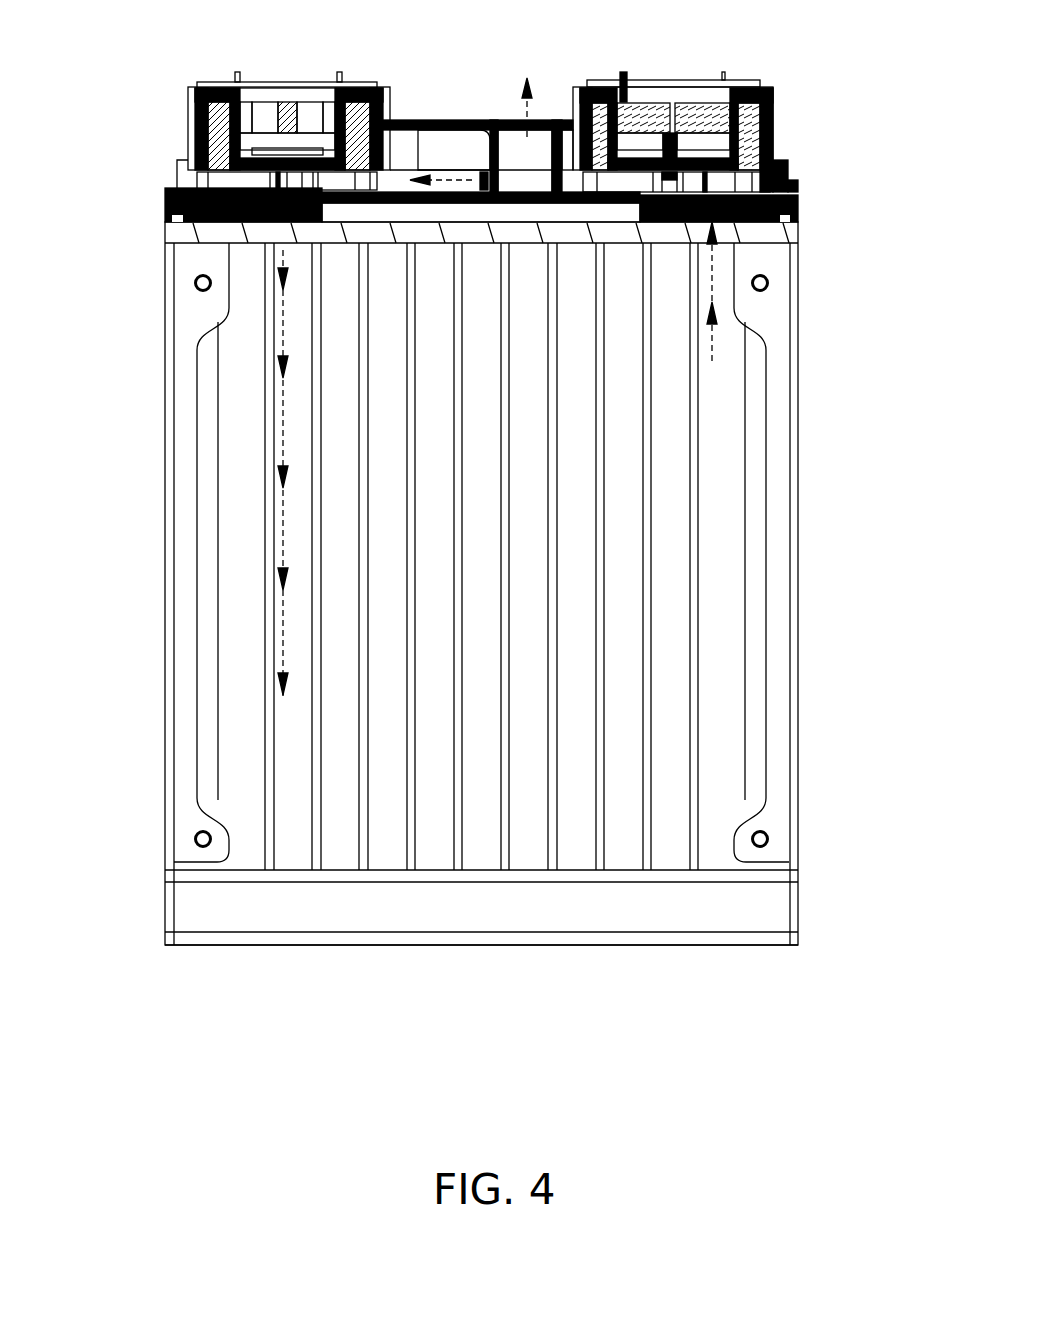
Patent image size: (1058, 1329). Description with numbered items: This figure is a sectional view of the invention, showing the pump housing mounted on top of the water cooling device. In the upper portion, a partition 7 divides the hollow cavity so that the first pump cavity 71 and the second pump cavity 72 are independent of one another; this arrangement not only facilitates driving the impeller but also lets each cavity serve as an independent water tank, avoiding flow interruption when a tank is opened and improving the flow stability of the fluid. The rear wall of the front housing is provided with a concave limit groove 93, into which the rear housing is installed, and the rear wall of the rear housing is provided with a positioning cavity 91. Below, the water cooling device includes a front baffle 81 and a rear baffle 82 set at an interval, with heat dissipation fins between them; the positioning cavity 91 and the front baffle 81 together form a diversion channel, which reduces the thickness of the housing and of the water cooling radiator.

The partition 7 is at (480, 118).
The first pump cavity 71 is at (402, 163).
The second pump cavity 72 is at (533, 142).
The front baffle 81 is at (773, 230).
The rear baffle 82 is at (790, 912).
The positioning cavity 91 is at (372, 207).
The limit groove 93 is at (330, 103).